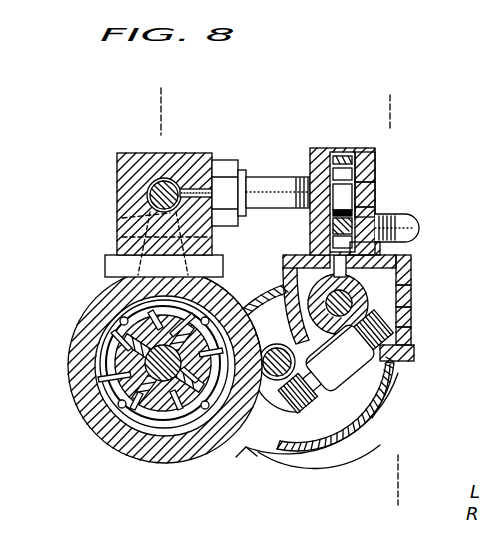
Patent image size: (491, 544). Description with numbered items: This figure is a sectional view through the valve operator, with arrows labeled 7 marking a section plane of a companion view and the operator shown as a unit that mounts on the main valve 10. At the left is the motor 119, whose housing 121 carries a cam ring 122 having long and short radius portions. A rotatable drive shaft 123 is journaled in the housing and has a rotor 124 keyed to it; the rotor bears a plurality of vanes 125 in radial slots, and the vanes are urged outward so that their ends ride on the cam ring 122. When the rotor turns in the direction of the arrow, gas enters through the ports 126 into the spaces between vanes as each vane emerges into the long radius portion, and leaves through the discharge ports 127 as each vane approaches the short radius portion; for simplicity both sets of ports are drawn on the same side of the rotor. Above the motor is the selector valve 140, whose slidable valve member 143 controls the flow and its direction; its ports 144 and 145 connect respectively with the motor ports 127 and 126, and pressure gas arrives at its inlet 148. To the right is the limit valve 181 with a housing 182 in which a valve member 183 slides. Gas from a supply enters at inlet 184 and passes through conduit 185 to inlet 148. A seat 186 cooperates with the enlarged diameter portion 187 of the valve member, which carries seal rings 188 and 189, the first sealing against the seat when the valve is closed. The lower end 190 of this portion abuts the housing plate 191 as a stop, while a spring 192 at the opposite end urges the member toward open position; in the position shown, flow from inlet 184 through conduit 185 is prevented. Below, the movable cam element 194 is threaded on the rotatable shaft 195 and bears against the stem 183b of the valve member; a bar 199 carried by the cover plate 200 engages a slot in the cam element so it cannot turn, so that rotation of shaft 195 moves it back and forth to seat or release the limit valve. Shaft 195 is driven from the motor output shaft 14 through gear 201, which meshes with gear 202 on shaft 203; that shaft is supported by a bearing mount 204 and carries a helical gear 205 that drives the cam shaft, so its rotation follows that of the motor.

The section line 7- 7 is at (392, 108).
The main valve 10 is at (158, 108).
The shaft 14 is at (277, 346).
The motor 119 is at (96, 418).
The housing 121 is at (118, 380).
The cam ring 122 is at (130, 420).
The drive shaft 123 is at (102, 336).
The rotor 124 is at (160, 420).
The vanes 125 is at (108, 360).
The ports 126 is at (118, 400).
The ports 127 is at (120, 318).
The selector valve 140 is at (115, 173).
The valve member 143 is at (162, 182).
The port 144 is at (122, 216).
The port 145 is at (122, 237).
The inlet 148 is at (196, 188).
The limit valve 181 is at (322, 146).
The housing 182 is at (380, 180).
The valve member 183 is at (378, 170).
The stem 183b is at (331, 294).
The inlet 184 is at (404, 216).
The conduit 185 is at (272, 178).
The seat 186 is at (378, 202).
The enlarged diameter portion 187 is at (332, 228).
The seal ring 188 is at (330, 214).
The seal ring 189 is at (382, 256).
The lower end 190 is at (320, 248).
The housing plate 191 is at (412, 273).
The spring 192 is at (345, 160).
The movable element 194 is at (412, 293).
The rotatable shaft 195 is at (284, 280).
The bar 199 is at (412, 313).
The cover plate 200 is at (414, 352).
The gear 201 is at (288, 398).
The gear 202 is at (270, 455).
The shaft 203 is at (330, 452).
The bearing mount 204 is at (396, 385).
The helical gear 205 is at (412, 334).